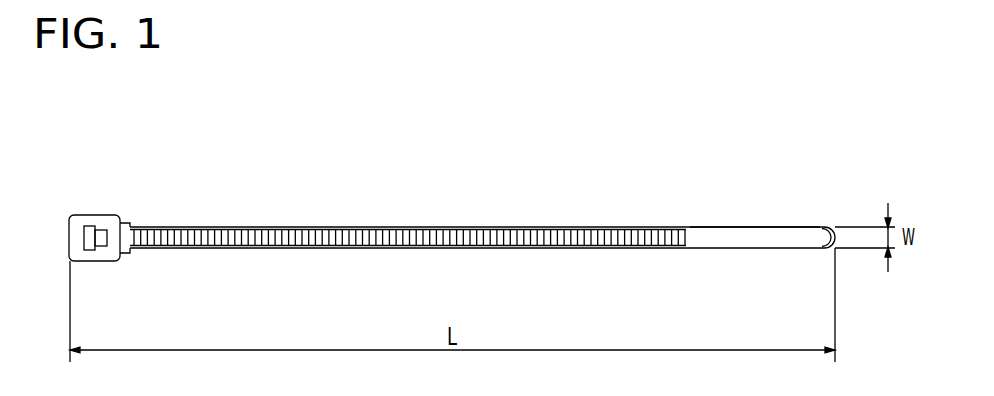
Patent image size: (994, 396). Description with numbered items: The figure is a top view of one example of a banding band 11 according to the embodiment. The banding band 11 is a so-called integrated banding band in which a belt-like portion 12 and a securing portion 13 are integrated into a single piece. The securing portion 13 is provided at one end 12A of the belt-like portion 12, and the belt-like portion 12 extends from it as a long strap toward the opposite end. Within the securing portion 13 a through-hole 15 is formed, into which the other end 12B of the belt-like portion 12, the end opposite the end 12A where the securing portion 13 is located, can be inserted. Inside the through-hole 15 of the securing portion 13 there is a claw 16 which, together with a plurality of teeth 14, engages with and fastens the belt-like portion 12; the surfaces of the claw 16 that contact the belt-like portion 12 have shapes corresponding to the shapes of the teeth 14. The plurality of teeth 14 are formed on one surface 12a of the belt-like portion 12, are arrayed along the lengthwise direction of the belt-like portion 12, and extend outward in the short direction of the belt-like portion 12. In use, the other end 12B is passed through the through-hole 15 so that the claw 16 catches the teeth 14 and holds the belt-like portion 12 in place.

The banding band 11 is at (592, 203).
The belt-like portion 12 is at (783, 228).
The one end of the belt-like portion 12A is at (181, 178).
The other end of the belt-like portion 12B is at (834, 178).
The one surface of the belt-like portion 12a is at (722, 245).
The securing portion 13 is at (104, 215).
The plurality of teeth 14 is at (332, 227).
The through-hole 15 is at (88, 226).
The claw 16 is at (100, 250).